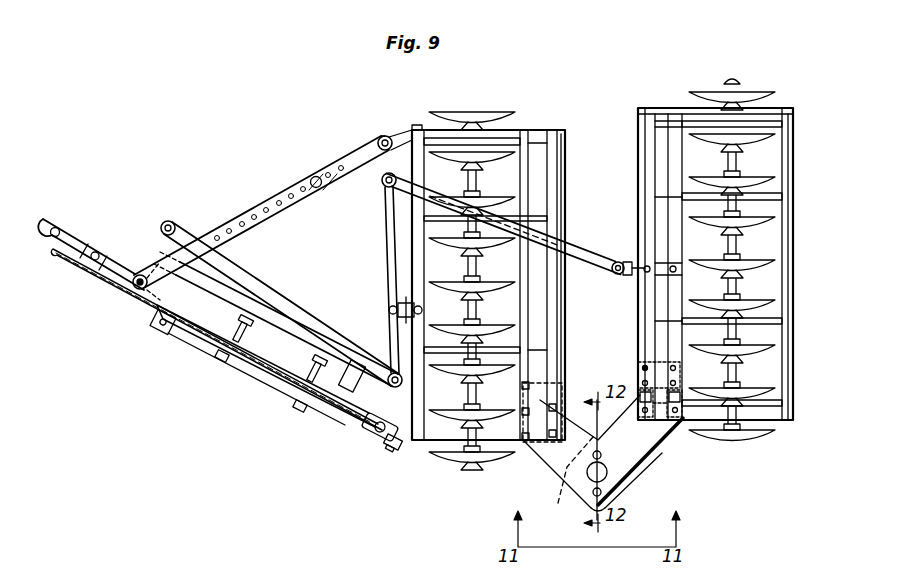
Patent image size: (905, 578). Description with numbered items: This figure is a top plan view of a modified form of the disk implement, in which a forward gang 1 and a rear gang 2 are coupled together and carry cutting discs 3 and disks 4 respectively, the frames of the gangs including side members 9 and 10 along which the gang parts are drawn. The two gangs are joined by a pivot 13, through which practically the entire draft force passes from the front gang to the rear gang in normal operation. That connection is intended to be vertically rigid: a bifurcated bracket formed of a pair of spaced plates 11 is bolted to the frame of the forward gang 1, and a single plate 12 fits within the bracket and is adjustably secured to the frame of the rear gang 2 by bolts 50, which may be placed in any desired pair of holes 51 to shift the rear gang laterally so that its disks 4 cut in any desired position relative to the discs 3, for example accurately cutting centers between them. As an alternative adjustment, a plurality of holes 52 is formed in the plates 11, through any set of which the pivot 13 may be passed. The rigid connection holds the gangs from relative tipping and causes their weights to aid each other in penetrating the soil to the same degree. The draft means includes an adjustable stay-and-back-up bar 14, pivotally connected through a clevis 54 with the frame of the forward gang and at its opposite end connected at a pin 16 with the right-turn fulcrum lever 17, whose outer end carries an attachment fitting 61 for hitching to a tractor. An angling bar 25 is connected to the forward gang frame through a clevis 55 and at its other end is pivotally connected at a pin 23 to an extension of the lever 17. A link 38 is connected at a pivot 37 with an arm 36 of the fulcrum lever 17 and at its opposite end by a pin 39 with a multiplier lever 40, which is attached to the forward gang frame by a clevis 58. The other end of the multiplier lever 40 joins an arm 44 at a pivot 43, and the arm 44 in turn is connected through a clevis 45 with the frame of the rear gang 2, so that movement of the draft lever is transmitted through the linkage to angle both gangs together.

The forward gang 1 is at (557, 126).
The rear gang 2 is at (798, 105).
The discs of the forward gang 3 is at (497, 110).
The disks of the rearward gang 4 is at (742, 92).
The frame side post 9 is at (558, 149).
The second frame side post 10 is at (783, 147).
The spaced plates 11 is at (557, 460).
The single plate 12 is at (660, 445).
The pivot 13 is at (608, 477).
The stay-and-back-up bar 14 is at (295, 178).
The pin 16 is at (141, 267).
The right-turn fulcrum lever 17 is at (105, 244).
The pin 23 is at (165, 330).
The angling bar 25 is at (375, 434).
The arm 36 is at (164, 232).
The pivot 37 is at (180, 232).
The link 38 is at (302, 317).
The pin 39 is at (393, 372).
The multiplier lever 40 is at (389, 256).
The pivot 43 is at (383, 186).
The arm 44 is at (579, 250).
The clevis 45 is at (620, 263).
The bolts 50 is at (684, 398).
The holes 51 is at (670, 364).
The holes 52 is at (594, 460).
The clevis 54 is at (386, 135).
The clevis 55 is at (390, 450).
The clevis 58 is at (392, 302).
The pivot hole 61 is at (67, 226).